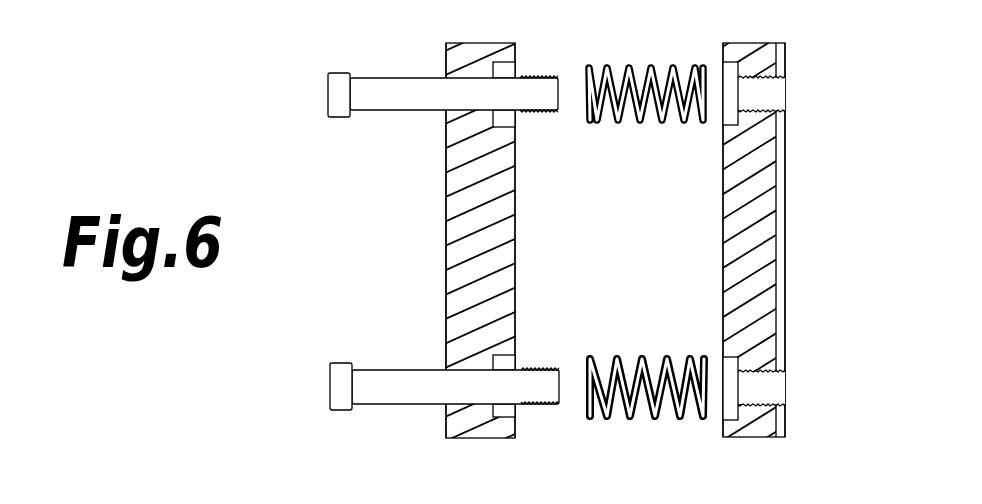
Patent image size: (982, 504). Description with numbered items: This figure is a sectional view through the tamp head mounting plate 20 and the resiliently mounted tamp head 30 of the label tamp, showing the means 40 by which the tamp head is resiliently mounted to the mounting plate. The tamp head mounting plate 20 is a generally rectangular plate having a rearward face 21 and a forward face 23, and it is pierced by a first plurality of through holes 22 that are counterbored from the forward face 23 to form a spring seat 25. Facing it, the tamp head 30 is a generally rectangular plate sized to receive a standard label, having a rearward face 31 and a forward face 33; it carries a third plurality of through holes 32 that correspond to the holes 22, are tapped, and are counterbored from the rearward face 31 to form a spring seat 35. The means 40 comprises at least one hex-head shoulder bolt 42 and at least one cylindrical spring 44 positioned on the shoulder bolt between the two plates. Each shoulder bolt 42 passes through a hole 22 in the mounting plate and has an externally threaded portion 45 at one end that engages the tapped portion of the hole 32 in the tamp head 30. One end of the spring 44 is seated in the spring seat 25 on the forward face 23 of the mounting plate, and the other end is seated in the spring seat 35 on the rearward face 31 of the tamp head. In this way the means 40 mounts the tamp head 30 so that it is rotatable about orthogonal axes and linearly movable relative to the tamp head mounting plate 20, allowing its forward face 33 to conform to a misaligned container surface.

The tamp head mounting plate 20 is at (473, 288).
The rearward face of the tamp head mounting plate 21 is at (446, 163).
The first plurality of through holes 22 is at (462, 86).
The forward face of the tamp head mounting plate 23 is at (515, 315).
The spring seat 25 is at (507, 117).
The tamp head 30 is at (737, 243).
The rearward face of the tamp head 31 is at (723, 328).
The third plurality of through holes 32 is at (765, 385).
The forward face of the tamp head 33 is at (785, 148).
The spring seat 35 is at (727, 118).
The means for resiliently mounting the tamp head 40 is at (562, 56).
The hex-head shoulder bolt 42 is at (383, 404).
The cylindrical spring 44 is at (608, 65).
The externally threaded portion 45 is at (542, 405).